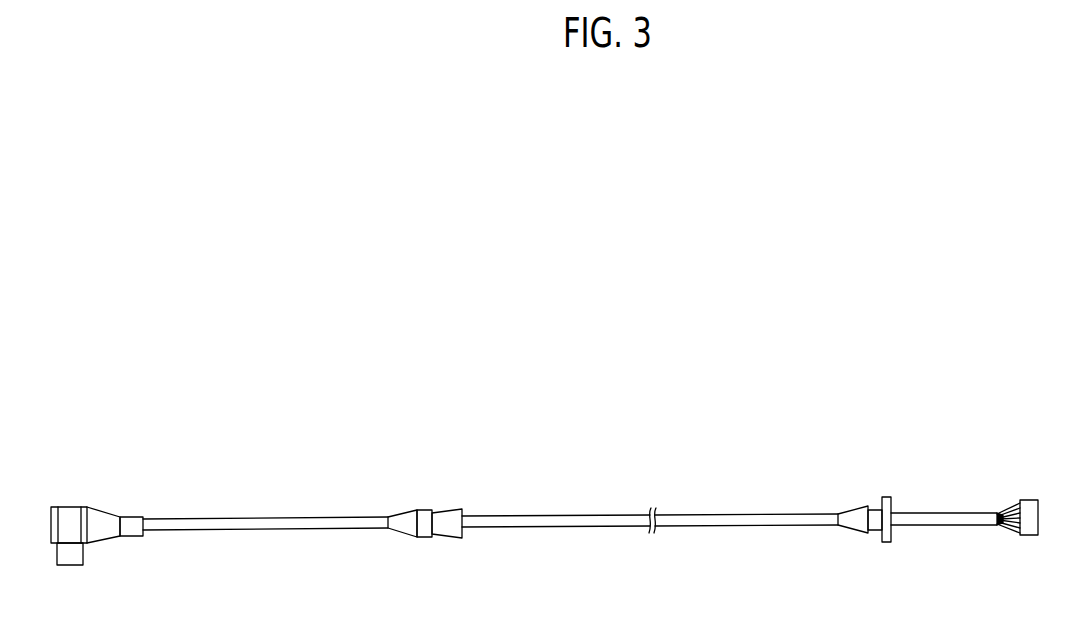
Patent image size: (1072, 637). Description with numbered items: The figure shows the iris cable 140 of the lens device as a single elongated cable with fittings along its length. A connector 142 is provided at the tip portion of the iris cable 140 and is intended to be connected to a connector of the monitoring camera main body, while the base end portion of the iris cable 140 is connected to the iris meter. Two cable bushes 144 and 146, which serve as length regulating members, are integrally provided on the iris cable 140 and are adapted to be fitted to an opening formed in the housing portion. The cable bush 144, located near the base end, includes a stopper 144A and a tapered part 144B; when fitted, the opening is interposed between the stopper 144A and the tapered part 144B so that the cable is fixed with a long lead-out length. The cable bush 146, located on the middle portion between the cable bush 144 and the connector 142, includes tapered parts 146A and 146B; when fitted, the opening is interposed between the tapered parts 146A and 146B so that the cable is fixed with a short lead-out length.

The iris cable 140 is at (585, 389).
The connector 142 is at (68, 505).
The cable bush 144 is at (887, 431).
The stopper 144A is at (889, 494).
The tapered part 144B is at (842, 510).
The cable bush 146 is at (447, 437).
The tapered part 146A is at (447, 508).
The tapered part 146B is at (399, 508).